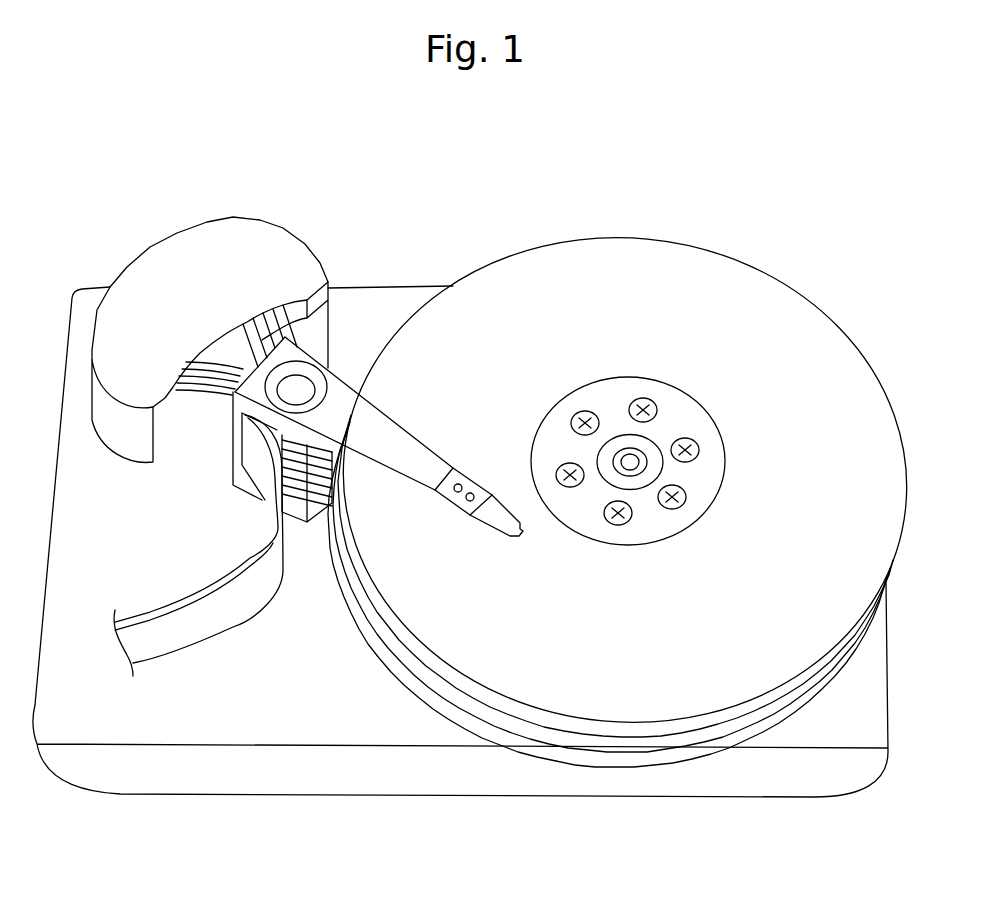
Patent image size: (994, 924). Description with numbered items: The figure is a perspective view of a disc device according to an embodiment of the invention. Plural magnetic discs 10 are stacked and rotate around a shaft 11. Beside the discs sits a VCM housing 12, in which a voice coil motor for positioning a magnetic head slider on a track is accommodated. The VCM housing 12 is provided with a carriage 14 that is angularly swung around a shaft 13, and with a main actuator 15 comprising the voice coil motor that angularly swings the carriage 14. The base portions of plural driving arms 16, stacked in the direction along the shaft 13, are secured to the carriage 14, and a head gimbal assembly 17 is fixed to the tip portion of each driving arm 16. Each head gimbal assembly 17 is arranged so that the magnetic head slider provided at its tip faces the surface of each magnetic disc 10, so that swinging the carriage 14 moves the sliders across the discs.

The magnetic discs 10 is at (812, 290).
The shaft 11 is at (628, 460).
The VCM housing 12 is at (143, 350).
The shaft 13 is at (296, 392).
The carriage 14 is at (236, 457).
The main actuator 15 is at (185, 442).
The driving arms 16 is at (363, 423).
The head gimbal assembly (HGA) 17 is at (492, 522).